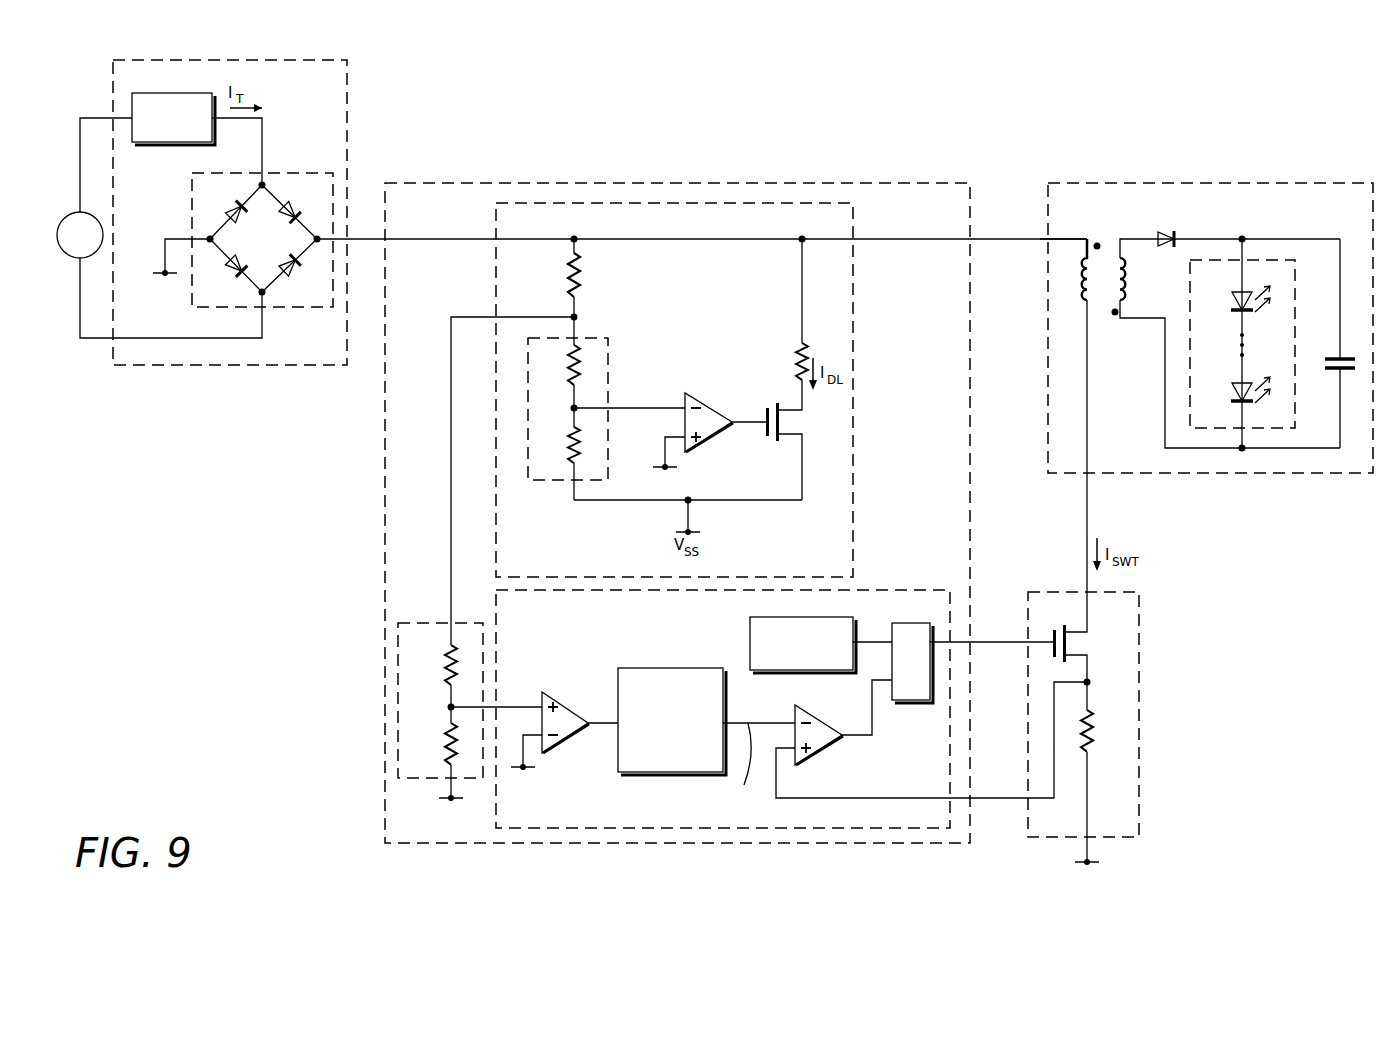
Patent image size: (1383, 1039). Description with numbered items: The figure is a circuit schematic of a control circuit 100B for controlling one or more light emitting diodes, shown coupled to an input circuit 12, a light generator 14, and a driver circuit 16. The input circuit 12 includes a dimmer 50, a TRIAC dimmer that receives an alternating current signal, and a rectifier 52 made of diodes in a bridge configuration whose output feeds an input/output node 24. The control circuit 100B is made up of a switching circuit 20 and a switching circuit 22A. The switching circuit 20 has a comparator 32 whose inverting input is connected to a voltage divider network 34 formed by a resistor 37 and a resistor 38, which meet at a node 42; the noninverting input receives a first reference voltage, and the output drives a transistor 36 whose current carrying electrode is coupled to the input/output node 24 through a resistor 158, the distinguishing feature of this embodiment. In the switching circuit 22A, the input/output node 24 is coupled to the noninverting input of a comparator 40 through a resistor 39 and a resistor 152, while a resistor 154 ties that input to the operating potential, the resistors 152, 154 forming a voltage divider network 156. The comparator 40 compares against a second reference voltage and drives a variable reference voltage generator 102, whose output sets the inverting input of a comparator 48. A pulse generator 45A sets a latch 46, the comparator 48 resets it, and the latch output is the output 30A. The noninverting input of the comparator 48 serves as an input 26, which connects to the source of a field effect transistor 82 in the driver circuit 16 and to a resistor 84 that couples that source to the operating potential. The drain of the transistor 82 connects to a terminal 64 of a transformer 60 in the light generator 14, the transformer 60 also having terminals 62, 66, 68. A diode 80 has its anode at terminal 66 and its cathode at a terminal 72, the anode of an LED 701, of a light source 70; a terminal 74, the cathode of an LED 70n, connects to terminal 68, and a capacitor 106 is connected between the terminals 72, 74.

The input circuit 12 is at (347, 97).
The dimmer 50 is at (171, 92).
The rectifier 52 is at (295, 180).
The input/output node 24 is at (360, 239).
The control circuit 100B is at (905, 183).
The switching circuit 20 is at (853, 412).
The resistor 39 is at (582, 274).
The voltage divider network 34 is at (608, 365).
The resistor 37 is at (568, 368).
The node 42 is at (570, 402).
The resistor 38 is at (568, 450).
The comparator 32 is at (710, 400).
The transistor 36 is at (800, 426).
The resistor 158 is at (795, 355).
The switching circuit 22A is at (880, 590).
The voltage divider network 156 is at (418, 623).
The resistor 152 is at (448, 672).
The resistor 154 is at (448, 748).
The comparator 40 is at (573, 685).
The variable reference voltage generator 102 is at (650, 668).
The comparator 48 is at (815, 713).
The input 26 is at (1000, 798).
The pulse generator 45A is at (750, 637).
The latch 46 is at (900, 623).
The output 30A is at (1000, 642).
The driver circuit 16 is at (1139, 658).
The field effect transistor 82 is at (1080, 644).
The terminal 64 is at (1087, 553).
The resistor 84 is at (1095, 722).
The light generator 14 is at (1330, 183).
The terminal 62 is at (1053, 240).
The transformer 60 is at (1211, 328).
The terminal 66 is at (1138, 236).
The terminal 68 is at (1140, 318).
The diode 80 is at (1180, 232).
The light source 70 is at (1258, 343).
The terminal 72 is at (1238, 285).
The terminal 74 is at (1238, 415).
The LED 701 is at (1225, 320).
The LED 70n is at (1211, 372).
The capacitor 106 is at (1326, 356).